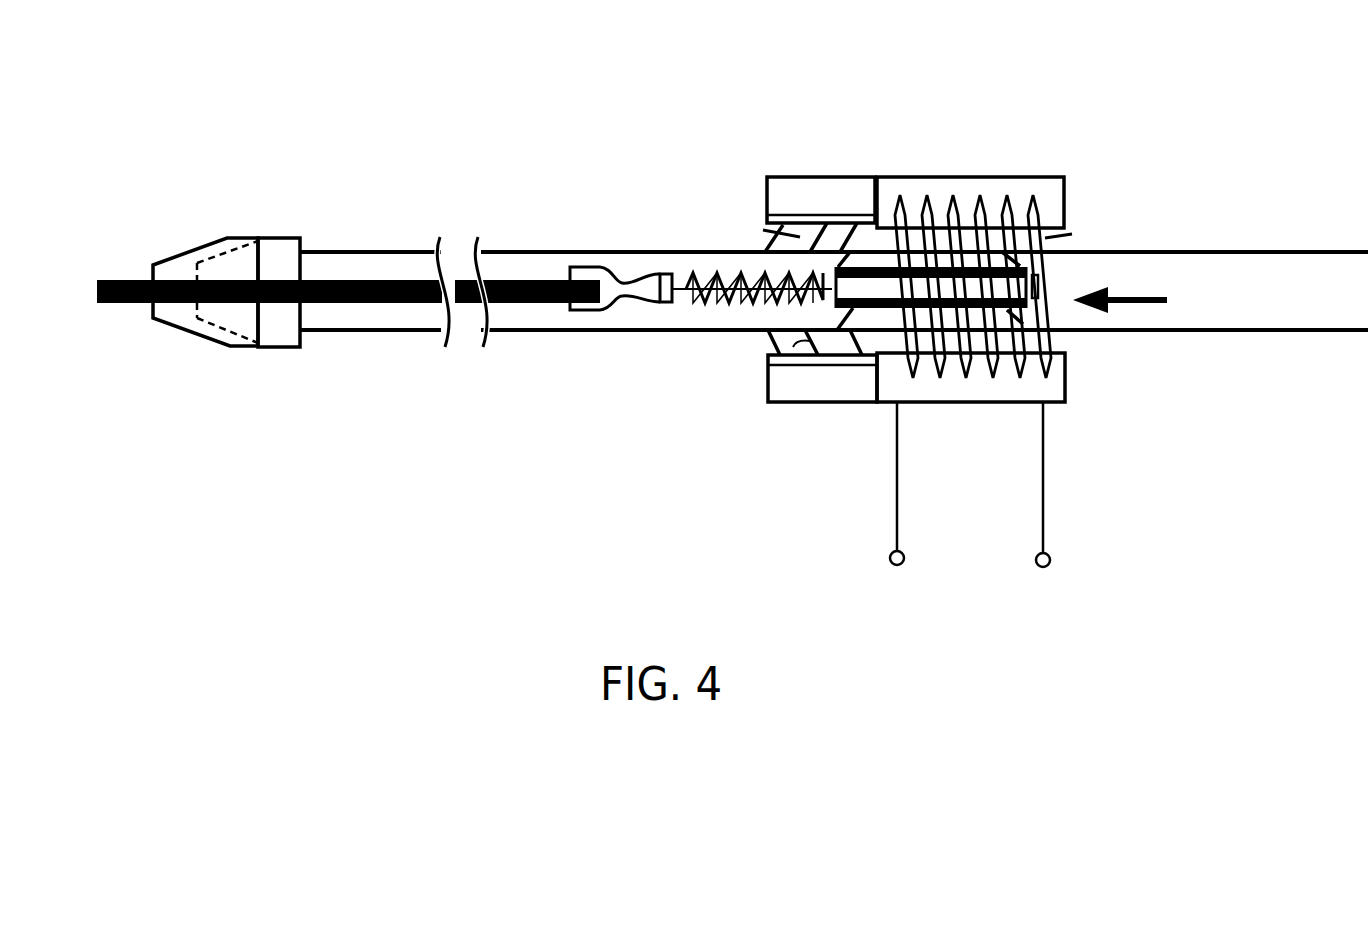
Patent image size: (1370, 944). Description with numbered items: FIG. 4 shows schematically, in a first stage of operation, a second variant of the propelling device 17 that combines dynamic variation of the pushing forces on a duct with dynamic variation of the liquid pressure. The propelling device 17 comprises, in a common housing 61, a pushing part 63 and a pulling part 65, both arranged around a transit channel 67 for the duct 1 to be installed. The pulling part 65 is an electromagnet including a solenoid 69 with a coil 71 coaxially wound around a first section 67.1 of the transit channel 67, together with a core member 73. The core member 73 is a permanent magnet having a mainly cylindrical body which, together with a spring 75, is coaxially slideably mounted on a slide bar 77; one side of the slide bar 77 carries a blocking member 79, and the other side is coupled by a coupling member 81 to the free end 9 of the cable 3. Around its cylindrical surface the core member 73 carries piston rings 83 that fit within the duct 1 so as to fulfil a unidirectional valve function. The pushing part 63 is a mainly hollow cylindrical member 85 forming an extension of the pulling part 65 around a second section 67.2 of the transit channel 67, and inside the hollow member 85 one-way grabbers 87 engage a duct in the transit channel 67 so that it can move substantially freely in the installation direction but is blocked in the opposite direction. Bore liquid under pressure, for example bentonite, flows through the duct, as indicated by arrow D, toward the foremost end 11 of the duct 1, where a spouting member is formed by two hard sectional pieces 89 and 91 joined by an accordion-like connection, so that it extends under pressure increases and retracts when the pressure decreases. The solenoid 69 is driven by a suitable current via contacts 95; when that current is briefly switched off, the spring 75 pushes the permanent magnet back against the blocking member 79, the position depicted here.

The duct 1 is at (1277, 252).
The cable 3 is at (117, 272).
The free end of the cable 9 is at (530, 280).
The foremost end of the duct 11 is at (377, 252).
The propelling device 17 is at (1021, 213).
The common housing 61 is at (906, 175).
The pushing part 63 is at (787, 185).
The pulling part 65 is at (1025, 212).
The transit channel 67 is at (862, 347).
The first section of the transit channel 67.1 is at (1047, 240).
The second section of the transit channel 67.2 is at (765, 230).
The solenoid 69 is at (1045, 203).
The coil 71 is at (992, 210).
The core member 73 is at (838, 265).
The spring 75 is at (708, 277).
The slide bar 77 is at (679, 305).
The blocking member 79 is at (1038, 290).
The coupling member 81 is at (619, 278).
The piston rings 83 is at (835, 235).
The hollow member 85 is at (818, 347).
The one-way grabbers 87 is at (797, 350).
The hard sectional piece 89 is at (200, 340).
The hard sectional piece 91 is at (284, 238).
The contacts 95 is at (1033, 553).
The arrow D is at (1140, 300).